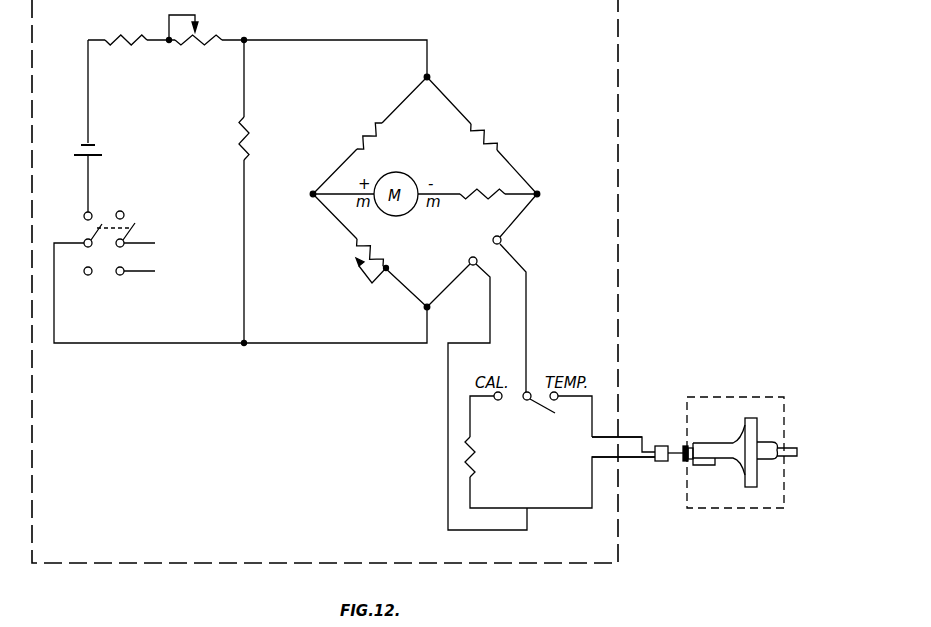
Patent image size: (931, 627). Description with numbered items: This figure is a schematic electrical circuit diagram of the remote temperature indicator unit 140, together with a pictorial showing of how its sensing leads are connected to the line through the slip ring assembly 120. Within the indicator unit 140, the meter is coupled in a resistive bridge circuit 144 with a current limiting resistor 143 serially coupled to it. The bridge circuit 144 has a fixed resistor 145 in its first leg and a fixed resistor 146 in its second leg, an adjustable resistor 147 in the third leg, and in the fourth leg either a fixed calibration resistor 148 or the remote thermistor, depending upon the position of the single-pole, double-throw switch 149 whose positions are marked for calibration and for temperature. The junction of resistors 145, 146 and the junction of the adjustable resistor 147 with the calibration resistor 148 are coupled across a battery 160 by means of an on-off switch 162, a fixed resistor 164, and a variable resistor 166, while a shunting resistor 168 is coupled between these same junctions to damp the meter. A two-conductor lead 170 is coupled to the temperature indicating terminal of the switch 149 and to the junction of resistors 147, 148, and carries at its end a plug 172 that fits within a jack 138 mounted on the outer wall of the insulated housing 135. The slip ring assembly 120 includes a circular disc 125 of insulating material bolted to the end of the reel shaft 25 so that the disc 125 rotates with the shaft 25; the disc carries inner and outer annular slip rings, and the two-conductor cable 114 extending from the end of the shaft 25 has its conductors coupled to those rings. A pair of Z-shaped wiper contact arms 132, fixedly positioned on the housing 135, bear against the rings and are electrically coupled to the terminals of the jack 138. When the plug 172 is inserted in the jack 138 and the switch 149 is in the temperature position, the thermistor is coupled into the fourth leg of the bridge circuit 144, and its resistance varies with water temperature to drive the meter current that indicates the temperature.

The remote temperature indicator unit 140 is at (618, 150).
The fixed resistor 164 is at (132, 46).
The variable resistor 166 is at (200, 30).
The shunting resistor 168 is at (246, 150).
The battery 160 is at (74, 152).
The on-off switch 162 is at (141, 234).
The resistive bridge circuit 144 is at (486, 124).
The current limiting resistor 143 is at (480, 201).
The fixed resistor 145 is at (370, 128).
The fixed resistor 146 is at (490, 134).
The adjustable resistor 147 is at (357, 241).
The single-pole, double-throw switch 149 is at (528, 406).
The fixed calibration resistor 148 is at (478, 458).
The two-conductor lead 170 is at (625, 438).
The plug 172 is at (662, 462).
The jack 138 is at (685, 447).
The slip ring assembly 120 is at (748, 368).
The wiper contact arms 132 is at (713, 440).
The circular disc 125 is at (752, 487).
The reel shaft 25 is at (770, 462).
The two-conductor cable 114 is at (788, 447).
The insulated housing 135 is at (786, 402).